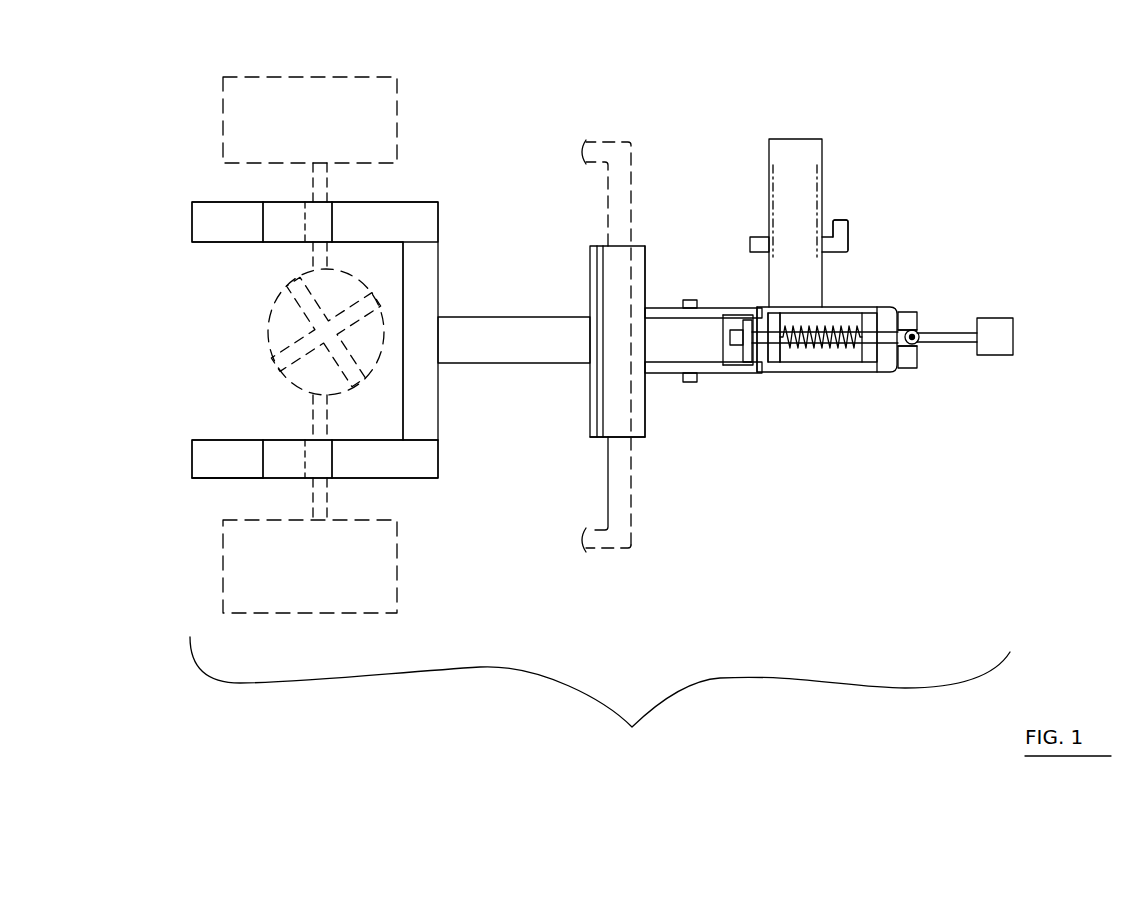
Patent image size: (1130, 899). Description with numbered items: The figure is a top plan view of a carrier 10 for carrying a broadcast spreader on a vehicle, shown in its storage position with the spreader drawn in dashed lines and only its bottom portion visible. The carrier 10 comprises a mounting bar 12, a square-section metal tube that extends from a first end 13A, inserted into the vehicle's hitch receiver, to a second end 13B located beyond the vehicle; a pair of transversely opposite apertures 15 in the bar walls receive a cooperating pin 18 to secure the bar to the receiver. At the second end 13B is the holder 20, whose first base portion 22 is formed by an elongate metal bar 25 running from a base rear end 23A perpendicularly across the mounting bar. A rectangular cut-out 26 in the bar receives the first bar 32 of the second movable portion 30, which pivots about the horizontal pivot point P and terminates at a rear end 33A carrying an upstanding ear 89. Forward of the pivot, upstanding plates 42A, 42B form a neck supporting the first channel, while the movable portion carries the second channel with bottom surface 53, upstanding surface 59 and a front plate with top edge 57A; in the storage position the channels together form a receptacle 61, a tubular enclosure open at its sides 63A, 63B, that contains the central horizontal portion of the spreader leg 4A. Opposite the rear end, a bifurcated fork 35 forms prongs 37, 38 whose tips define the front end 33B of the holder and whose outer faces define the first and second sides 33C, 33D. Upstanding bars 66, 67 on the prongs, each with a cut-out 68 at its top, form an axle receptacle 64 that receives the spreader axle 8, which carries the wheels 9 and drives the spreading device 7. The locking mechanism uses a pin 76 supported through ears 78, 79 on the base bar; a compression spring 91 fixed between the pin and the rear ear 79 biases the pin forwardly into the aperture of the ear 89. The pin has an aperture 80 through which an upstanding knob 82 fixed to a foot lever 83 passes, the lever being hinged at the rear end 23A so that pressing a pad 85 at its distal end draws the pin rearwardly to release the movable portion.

The carrier 10 is at (1017, 100).
The wheels 9 is at (397, 100).
The prong 38 is at (420, 200).
The bifurcated fork 35 is at (433, 445).
The prong 37 is at (408, 483).
The second side of the holder 33D is at (210, 202).
The front end of the holder 33B is at (192, 466).
The first side of the holder 33C is at (217, 480).
The axle receptacle 64 is at (330, 195).
The upstanding bar 67 is at (332, 222).
The upstanding bar 66 is at (332, 458).
The cut-out 68 is at (305, 458).
The axle 8 is at (313, 425).
The spreading device 7 is at (270, 335).
The second movable portion 30 is at (475, 363).
The bottom surface of the second channel 53 is at (600, 305).
The top edge of the front plate 57A is at (596, 283).
The upstanding surface of the second channel 59 is at (597, 246).
The receptacle 61 is at (603, 440).
The side of the receptacle 63B is at (620, 246).
The side of the receptacle 63A is at (621, 437).
The leg 4A is at (631, 200).
The upstanding plate 42B is at (668, 307).
The upstanding plate 42A is at (665, 373).
The pivot point P is at (685, 383).
The cut-out 26 is at (728, 312).
The first bar 32 is at (722, 365).
The rear end of the movable portion 33A is at (758, 312).
The first end of the mounting bar 13A is at (793, 139).
The mounting bar 12 is at (805, 205).
The apertures 15 is at (769, 233).
The pin 18 is at (848, 234).
The second end of the mounting bar 13B is at (822, 306).
The first base portion 22 is at (765, 375).
The upstanding ear 89 is at (745, 365).
The ear 78 is at (795, 372).
The compression spring 91 is at (838, 350).
The ear 79 is at (862, 365).
The elongate metal bar 25 is at (875, 372).
The pin 76 is at (898, 310).
The foot lever 83 is at (948, 344).
The upstanding knob 82 is at (918, 330).
The aperture 80 is at (920, 340).
The base rear end 23A is at (900, 372).
The pad 85 is at (1005, 318).
The holder 20 is at (600, 701).